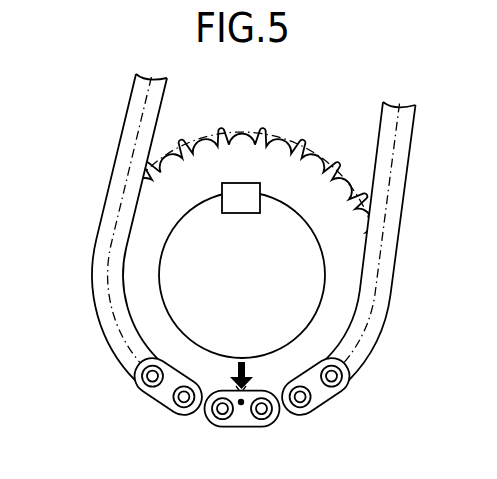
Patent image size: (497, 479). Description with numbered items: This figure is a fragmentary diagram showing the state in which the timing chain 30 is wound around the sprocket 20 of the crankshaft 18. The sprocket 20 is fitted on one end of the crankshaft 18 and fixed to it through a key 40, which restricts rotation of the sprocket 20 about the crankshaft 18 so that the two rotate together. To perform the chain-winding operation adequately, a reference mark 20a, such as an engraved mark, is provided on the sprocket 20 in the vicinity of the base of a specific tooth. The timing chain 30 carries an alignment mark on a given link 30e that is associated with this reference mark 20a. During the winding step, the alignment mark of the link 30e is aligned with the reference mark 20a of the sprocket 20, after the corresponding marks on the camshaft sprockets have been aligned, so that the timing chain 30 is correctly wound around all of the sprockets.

The crankshaft 18 is at (284, 295).
The sprocket 20 is at (301, 201).
The reference mark 20a is at (245, 384).
The timing chain 30 is at (120, 354).
The link 30e is at (242, 415).
The key 40 is at (242, 200).